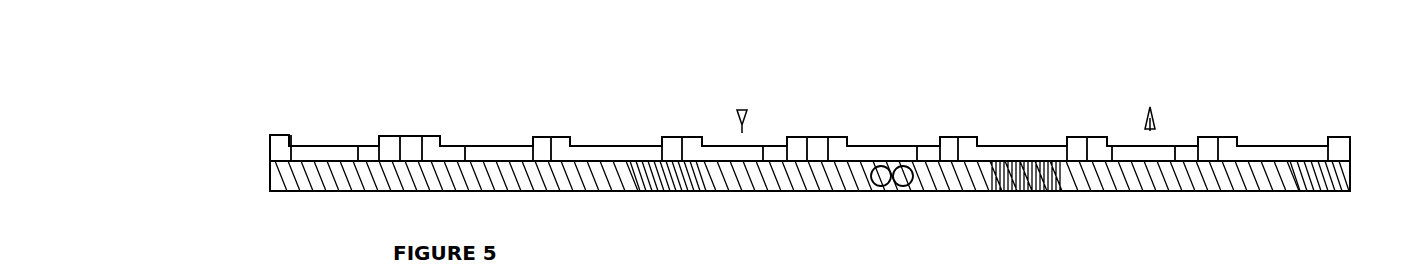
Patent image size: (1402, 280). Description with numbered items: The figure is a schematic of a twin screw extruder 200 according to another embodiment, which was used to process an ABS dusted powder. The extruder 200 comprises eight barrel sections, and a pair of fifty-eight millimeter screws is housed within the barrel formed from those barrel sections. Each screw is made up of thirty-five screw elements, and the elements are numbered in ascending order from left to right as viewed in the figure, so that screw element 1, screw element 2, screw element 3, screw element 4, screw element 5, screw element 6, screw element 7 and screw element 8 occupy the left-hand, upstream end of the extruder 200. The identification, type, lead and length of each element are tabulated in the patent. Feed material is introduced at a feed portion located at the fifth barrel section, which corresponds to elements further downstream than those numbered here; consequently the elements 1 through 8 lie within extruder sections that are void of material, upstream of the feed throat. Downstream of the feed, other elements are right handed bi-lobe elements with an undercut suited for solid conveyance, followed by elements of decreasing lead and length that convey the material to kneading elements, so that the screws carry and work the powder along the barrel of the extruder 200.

The twin screw extruder 200 is at (283, 90).
The screw element 1 is at (409, 147).
The screw element 2 is at (551, 147).
The screw element 3 is at (682, 147).
The screw element 4 is at (817, 147).
The screw element 5 is at (958, 147).
The screw element 6 is at (1087, 147).
The screw element 7 is at (1217, 147).
The screw element 8 is at (1339, 147).